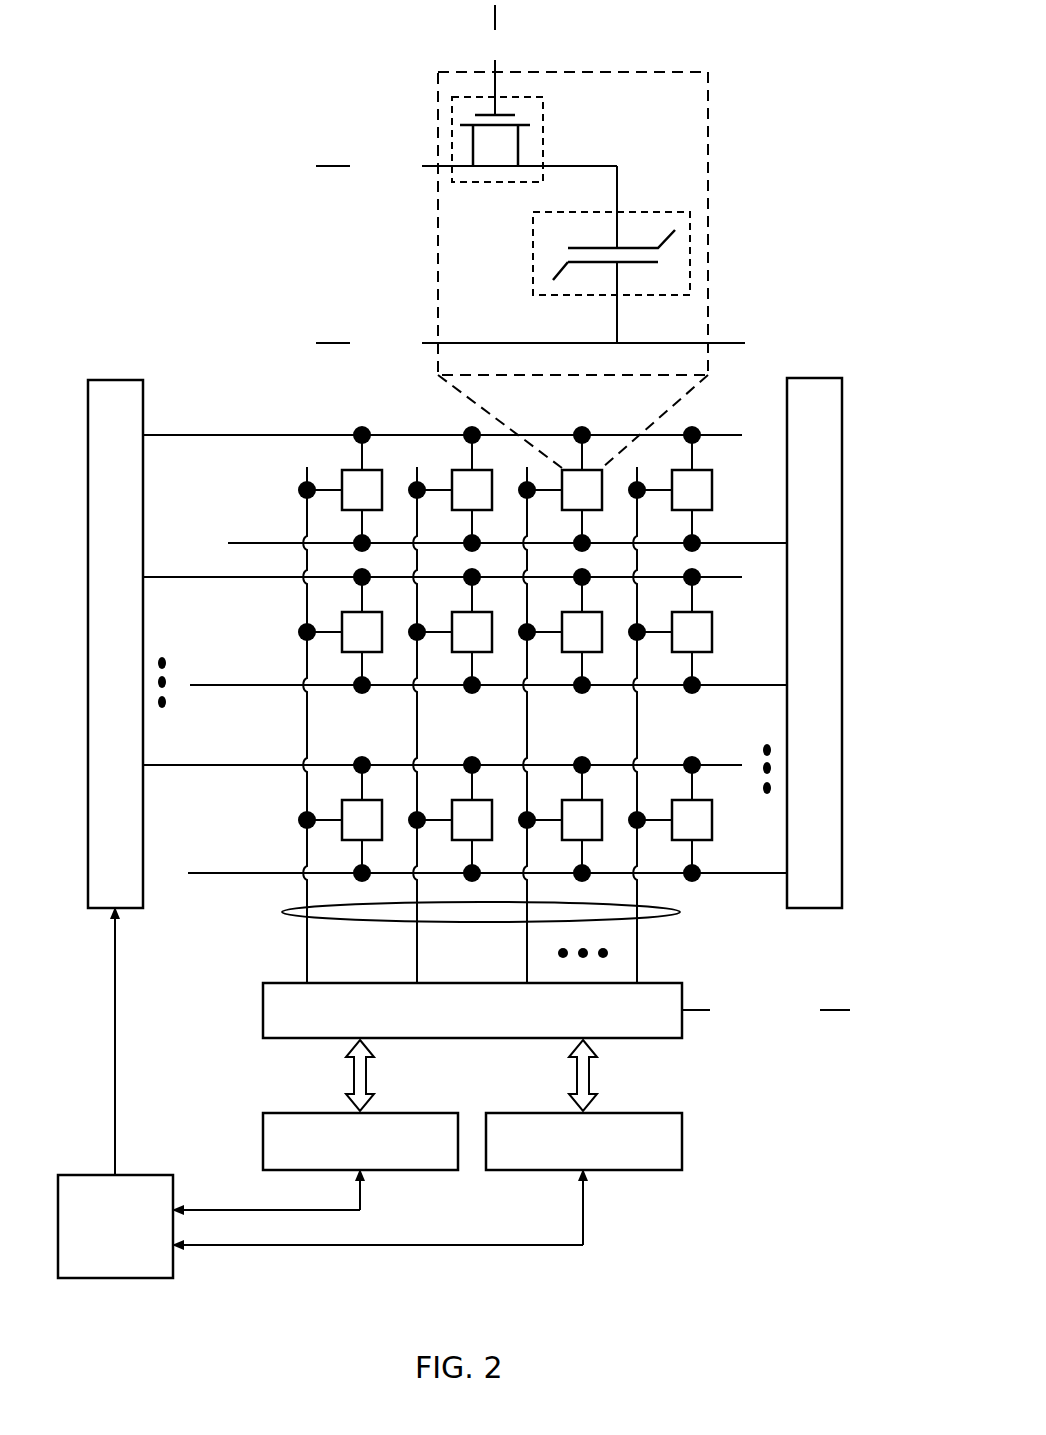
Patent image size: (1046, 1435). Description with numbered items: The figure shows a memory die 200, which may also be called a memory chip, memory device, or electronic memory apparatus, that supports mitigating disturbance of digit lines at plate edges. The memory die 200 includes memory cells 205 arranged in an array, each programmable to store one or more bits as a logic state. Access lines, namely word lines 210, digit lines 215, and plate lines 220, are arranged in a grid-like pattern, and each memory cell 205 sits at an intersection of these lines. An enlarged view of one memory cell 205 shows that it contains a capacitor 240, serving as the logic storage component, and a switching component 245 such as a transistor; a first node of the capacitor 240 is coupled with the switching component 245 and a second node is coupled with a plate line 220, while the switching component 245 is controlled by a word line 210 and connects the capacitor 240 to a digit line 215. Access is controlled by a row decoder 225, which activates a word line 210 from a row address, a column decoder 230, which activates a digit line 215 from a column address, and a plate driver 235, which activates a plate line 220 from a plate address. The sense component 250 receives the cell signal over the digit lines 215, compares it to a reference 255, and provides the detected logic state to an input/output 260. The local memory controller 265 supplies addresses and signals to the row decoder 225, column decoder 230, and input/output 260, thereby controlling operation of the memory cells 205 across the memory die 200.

The memory die 200 is at (730, 1283).
The memory cell 205 is at (343, 470).
The word line 210 is at (232, 435).
The digit line 215 is at (680, 912).
The plate line 220 is at (237, 543).
The row decoder 225 is at (88, 755).
The column decoder 230 is at (375, 1113).
The plate driver 235 is at (842, 750).
The capacitor 240 is at (533, 268).
The switching component 245 is at (545, 140).
The sense component 250 is at (310, 1038).
The reference 255 is at (838, 1012).
The input/output 260 is at (620, 1113).
The local memory controller 265 is at (110, 1278).